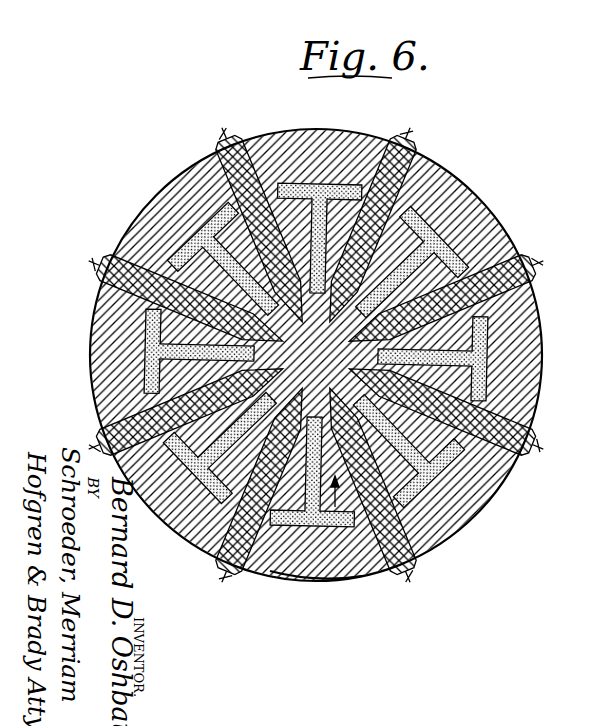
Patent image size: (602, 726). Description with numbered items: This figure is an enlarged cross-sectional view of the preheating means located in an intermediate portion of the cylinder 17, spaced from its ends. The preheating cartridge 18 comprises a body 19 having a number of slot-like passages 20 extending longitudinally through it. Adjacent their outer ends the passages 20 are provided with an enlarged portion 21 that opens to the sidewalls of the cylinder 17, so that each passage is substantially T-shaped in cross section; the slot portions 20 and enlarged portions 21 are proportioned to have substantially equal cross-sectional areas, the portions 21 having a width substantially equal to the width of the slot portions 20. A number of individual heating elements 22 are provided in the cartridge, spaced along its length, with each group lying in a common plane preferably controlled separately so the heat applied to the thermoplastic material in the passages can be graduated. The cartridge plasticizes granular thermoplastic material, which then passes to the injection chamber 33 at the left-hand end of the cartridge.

The cylinder 17 is at (463, 515).
The preheating cartridge 18 is at (340, 523).
The body 19 is at (433, 383).
The slot-like passages 20 is at (185, 222).
The enlarged portion 21 is at (143, 321).
The heating elements 22 is at (222, 140).
The injection chamber 33 is at (305, 523).